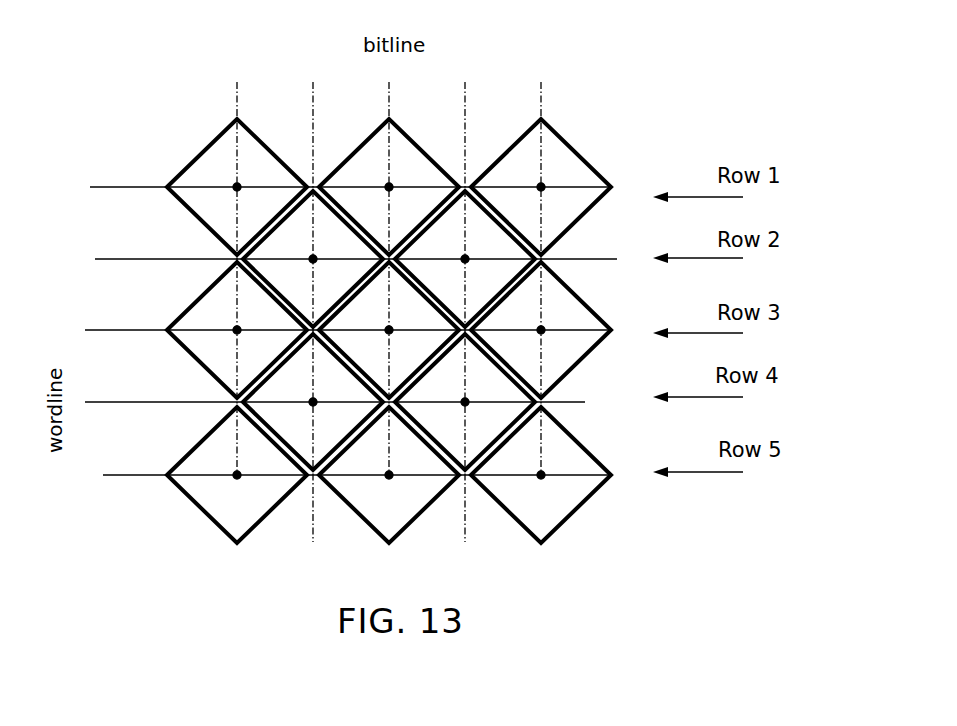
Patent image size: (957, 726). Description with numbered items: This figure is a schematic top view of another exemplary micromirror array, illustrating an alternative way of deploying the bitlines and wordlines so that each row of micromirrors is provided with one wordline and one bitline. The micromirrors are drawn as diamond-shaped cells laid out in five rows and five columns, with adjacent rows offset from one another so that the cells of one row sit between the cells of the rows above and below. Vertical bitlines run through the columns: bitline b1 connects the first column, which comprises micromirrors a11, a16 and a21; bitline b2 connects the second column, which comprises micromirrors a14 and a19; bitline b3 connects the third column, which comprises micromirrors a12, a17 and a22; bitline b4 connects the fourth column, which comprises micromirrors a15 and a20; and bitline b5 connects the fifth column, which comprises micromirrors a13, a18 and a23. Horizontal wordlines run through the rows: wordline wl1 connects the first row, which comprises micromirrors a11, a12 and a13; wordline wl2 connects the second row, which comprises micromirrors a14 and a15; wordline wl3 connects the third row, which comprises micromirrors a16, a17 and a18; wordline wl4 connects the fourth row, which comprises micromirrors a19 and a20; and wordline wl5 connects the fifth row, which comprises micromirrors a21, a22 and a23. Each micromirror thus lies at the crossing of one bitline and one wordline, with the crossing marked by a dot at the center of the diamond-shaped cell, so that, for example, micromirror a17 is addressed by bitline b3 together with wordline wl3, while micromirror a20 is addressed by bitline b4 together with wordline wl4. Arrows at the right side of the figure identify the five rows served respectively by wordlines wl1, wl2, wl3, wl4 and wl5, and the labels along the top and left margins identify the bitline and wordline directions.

The micromirror a11 is at (237, 187).
The micromirror a12 is at (389, 187).
The micromirror a13 is at (541, 187).
The micromirror a14 is at (313, 259).
The micromirror a15 is at (465, 259).
The micromirror a16 is at (237, 330).
The micromirror a17 is at (389, 330).
The micromirror a18 is at (541, 330).
The micromirror a19 is at (313, 402).
The micromirror a20 is at (465, 402).
The micromirror a21 is at (237, 475).
The micromirror a22 is at (389, 475).
The micromirror a23 is at (541, 475).
The bitline b1 is at (252, 278).
The bitline b2 is at (329, 312).
The bitline b3 is at (404, 278).
The bitline b4 is at (480, 312).
The bitline b5 is at (556, 278).
The wordline wl1 is at (350, 170).
The wordline wl2 is at (354, 241).
The wordline wl3 is at (348, 313).
The wordline wl4 is at (335, 385).
The wordline wl5 is at (349, 459).